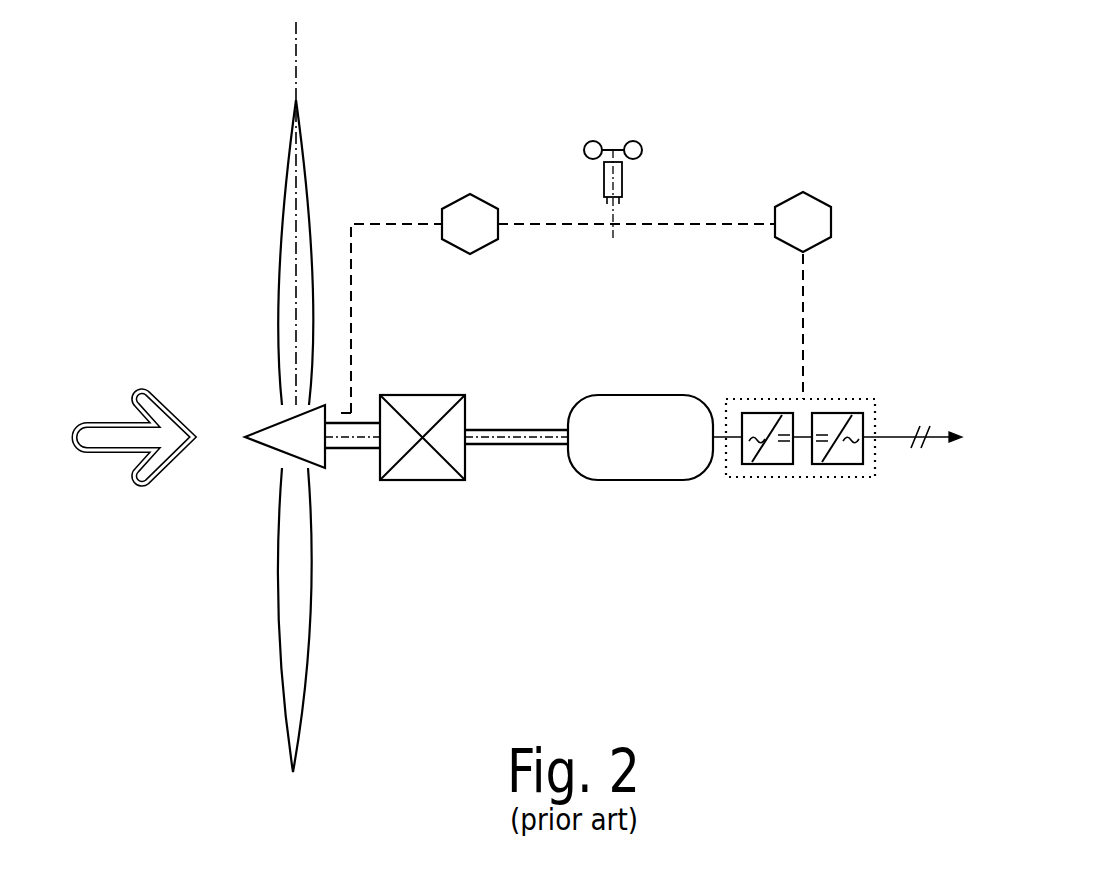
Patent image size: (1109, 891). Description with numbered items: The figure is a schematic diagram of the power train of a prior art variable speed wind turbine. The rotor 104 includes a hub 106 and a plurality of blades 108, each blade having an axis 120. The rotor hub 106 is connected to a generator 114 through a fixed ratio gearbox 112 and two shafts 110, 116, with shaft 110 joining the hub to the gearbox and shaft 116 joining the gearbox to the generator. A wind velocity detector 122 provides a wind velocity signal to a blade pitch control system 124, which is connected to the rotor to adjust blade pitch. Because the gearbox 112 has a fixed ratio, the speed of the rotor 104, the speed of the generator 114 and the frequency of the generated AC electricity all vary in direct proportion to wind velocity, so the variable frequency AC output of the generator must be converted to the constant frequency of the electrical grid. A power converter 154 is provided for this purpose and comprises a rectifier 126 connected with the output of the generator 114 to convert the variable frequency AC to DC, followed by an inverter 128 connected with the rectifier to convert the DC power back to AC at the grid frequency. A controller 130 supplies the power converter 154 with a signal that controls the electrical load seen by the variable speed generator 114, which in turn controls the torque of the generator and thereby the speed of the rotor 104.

The rotor 104 is at (329, 637).
The hub 106 is at (268, 408).
The blades 108 is at (262, 227).
The shaft 110 is at (351, 462).
The fixed ratio gearbox 112 is at (422, 384).
The generator 114 is at (640, 383).
The shaft 116 is at (513, 462).
The axis 120 is at (315, 55).
The wind velocity detector 122 is at (623, 130).
The blade pitch control system 124 is at (442, 190).
The rectifier 126 is at (768, 476).
The inverter 128 is at (838, 476).
The controller 130 is at (785, 188).
The power converter 154 is at (839, 389).